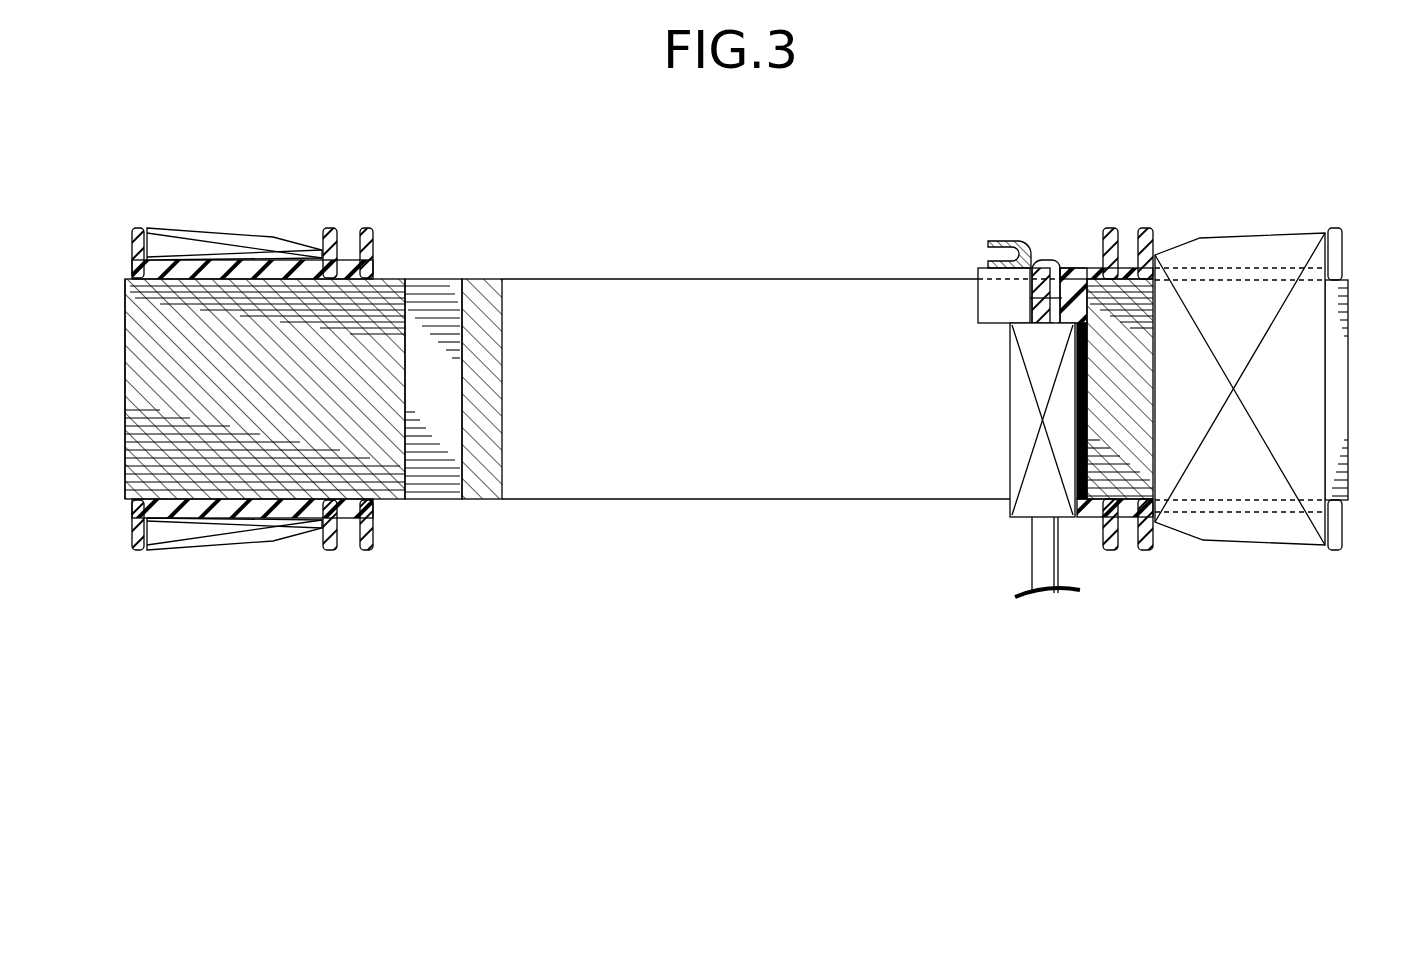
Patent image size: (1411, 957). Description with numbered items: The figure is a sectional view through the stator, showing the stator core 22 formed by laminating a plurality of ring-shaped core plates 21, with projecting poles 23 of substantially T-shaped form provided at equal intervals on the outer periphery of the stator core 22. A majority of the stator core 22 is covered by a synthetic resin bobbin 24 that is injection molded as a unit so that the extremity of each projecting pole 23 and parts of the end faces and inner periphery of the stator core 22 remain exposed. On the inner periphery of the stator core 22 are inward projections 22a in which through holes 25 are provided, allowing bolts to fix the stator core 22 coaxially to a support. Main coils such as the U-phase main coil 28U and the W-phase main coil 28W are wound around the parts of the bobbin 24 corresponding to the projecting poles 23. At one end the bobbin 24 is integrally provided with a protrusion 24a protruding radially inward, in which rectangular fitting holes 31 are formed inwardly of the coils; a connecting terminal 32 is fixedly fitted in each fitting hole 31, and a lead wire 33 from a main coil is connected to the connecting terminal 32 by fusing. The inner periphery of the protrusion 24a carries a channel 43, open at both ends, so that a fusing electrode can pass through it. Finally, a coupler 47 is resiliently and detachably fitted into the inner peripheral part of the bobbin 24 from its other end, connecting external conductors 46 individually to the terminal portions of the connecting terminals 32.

The core plate 21 is at (132, 450).
The stator core 22 is at (290, 395).
The projection 22a is at (482, 278).
The projecting pole 23 is at (1340, 376).
The bobbin 24 is at (132, 262).
The protrusion 24a is at (1070, 270).
The through hole 25 is at (458, 308).
The W-phase main coil 28W is at (212, 228).
The U-phase main coil 28U is at (1213, 245).
The fitting hole 31 is at (1035, 298).
The connecting terminal 32 is at (1043, 248).
The lead wire 33 is at (1000, 258).
The channel 43 is at (1030, 287).
The external conductor 46 is at (1043, 547).
The coupler 47 is at (1022, 443).